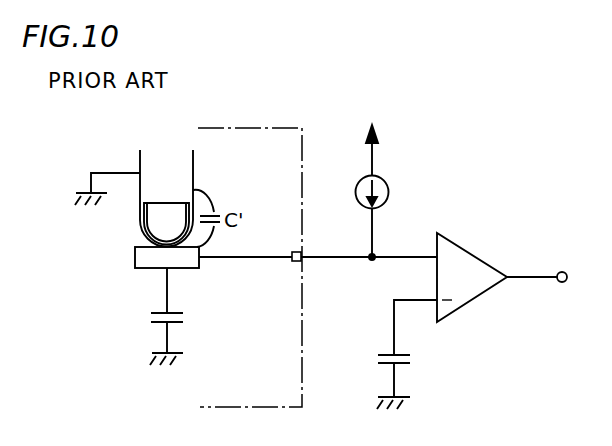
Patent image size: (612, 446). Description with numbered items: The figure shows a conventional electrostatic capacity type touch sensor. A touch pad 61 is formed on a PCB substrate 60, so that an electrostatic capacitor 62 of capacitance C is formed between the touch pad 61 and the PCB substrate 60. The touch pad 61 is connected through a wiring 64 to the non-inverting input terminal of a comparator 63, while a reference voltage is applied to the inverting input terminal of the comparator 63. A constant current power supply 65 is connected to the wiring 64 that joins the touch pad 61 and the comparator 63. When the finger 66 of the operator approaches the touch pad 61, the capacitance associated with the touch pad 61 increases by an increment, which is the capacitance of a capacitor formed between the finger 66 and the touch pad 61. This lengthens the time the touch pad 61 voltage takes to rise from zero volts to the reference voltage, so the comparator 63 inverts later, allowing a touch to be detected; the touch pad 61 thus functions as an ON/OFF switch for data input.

The PCB substrate 60 is at (245, 130).
The touch pad 61 is at (135, 255).
The electrostatic capacitor 62 is at (150, 316).
The comparator 63 is at (479, 258).
The wiring 64 is at (333, 260).
The constant current power supply 65 is at (390, 191).
The finger 66 is at (193, 172).